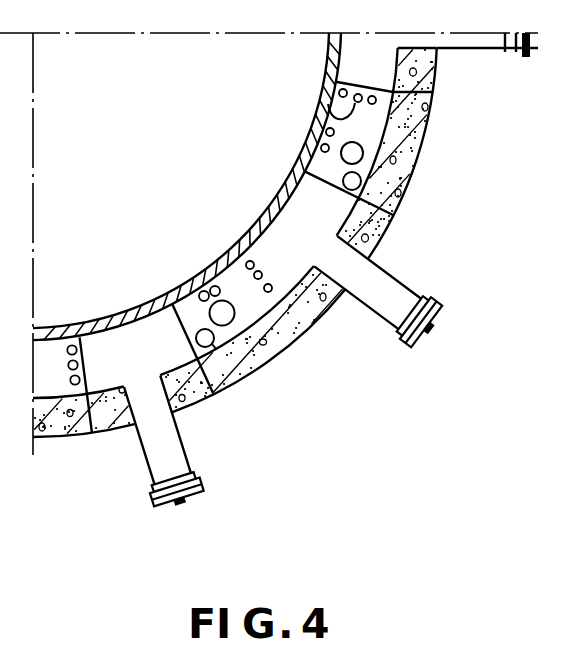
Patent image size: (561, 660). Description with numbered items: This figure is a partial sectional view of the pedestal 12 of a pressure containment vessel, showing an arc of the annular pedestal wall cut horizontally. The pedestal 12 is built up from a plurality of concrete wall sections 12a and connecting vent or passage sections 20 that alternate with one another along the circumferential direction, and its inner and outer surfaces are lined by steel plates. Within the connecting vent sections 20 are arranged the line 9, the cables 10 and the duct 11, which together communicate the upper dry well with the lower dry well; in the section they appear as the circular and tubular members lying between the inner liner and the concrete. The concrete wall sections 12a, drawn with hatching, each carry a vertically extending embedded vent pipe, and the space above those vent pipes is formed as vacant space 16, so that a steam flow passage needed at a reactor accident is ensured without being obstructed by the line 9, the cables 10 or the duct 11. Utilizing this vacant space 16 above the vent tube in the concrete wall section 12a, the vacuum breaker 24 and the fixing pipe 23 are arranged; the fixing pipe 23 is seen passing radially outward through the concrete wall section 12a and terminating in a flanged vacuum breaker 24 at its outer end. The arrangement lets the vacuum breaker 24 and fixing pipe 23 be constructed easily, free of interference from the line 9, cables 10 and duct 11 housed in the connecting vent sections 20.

The line 9 is at (231, 323).
The cables 10 is at (328, 104).
The duct 11 is at (265, 368).
The pedestal 12 is at (423, 156).
The concrete wall section 12a is at (403, 220).
The vacant space 16 is at (128, 347).
The connecting vent section 20 is at (323, 167).
The fixing pipe 23 is at (372, 310).
The vacuum breaker 24 is at (436, 302).